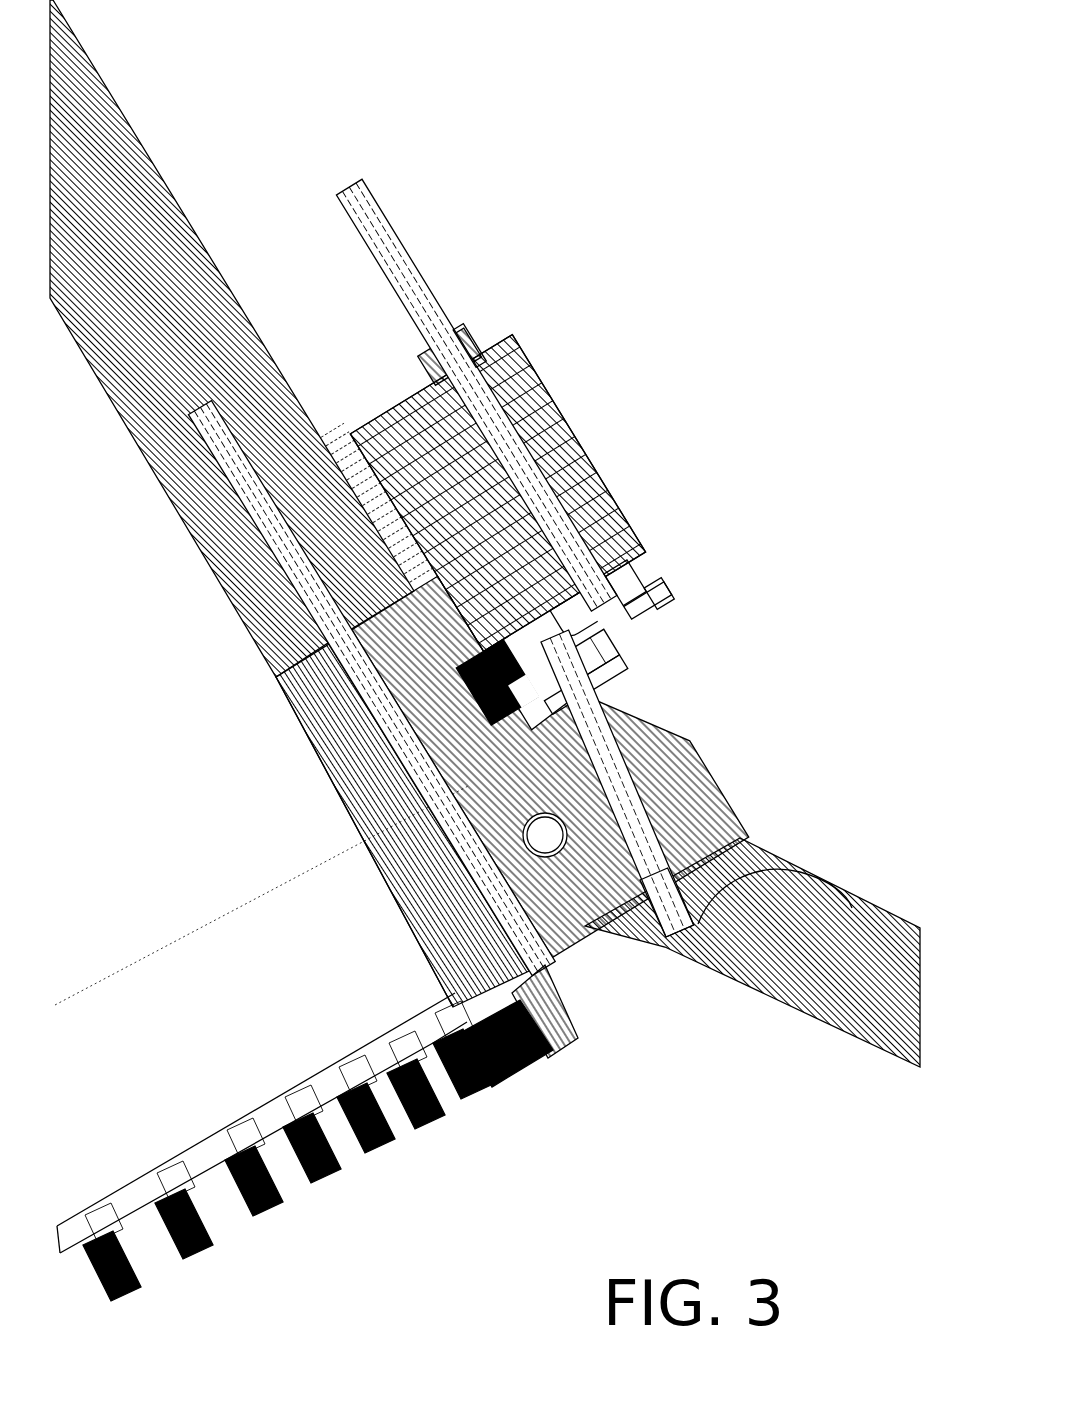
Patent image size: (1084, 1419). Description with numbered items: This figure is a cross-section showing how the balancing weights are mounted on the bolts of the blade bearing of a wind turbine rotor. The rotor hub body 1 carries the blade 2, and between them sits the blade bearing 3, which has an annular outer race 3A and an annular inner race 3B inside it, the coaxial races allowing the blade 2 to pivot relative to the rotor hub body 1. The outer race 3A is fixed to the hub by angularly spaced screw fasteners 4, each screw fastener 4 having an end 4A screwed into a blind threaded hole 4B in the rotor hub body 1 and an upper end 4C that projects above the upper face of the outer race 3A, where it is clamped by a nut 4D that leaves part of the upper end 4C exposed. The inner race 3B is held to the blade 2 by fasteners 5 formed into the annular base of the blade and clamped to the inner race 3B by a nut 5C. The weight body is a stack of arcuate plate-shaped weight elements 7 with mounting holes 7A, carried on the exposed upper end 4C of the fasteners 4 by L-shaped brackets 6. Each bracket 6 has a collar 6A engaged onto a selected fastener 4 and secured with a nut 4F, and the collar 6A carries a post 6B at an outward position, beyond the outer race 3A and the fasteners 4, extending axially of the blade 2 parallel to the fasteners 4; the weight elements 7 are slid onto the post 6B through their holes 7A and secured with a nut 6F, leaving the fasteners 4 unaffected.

The rotor hub body 1 is at (863, 975).
The blade 2 is at (110, 180).
The blade bearing 3 is at (322, 937).
The outer race 3A is at (628, 733).
The inner race 3B is at (427, 887).
The screw fastener 4 is at (615, 790).
The end of fastener 4A is at (680, 945).
The blind threaded hole 4B is at (697, 917).
The upper end of fastener 4C is at (580, 690).
The nut 4D is at (593, 667).
The nut 4F is at (620, 580).
The fastener 5 is at (333, 657).
The nut 5C is at (545, 967).
The L-shaped bracket 6 is at (600, 615).
The collar 6A is at (633, 617).
The post 6B is at (410, 267).
The nut 6F is at (468, 345).
The weight element 7 is at (593, 463).
The mounting hole 7A is at (505, 410).